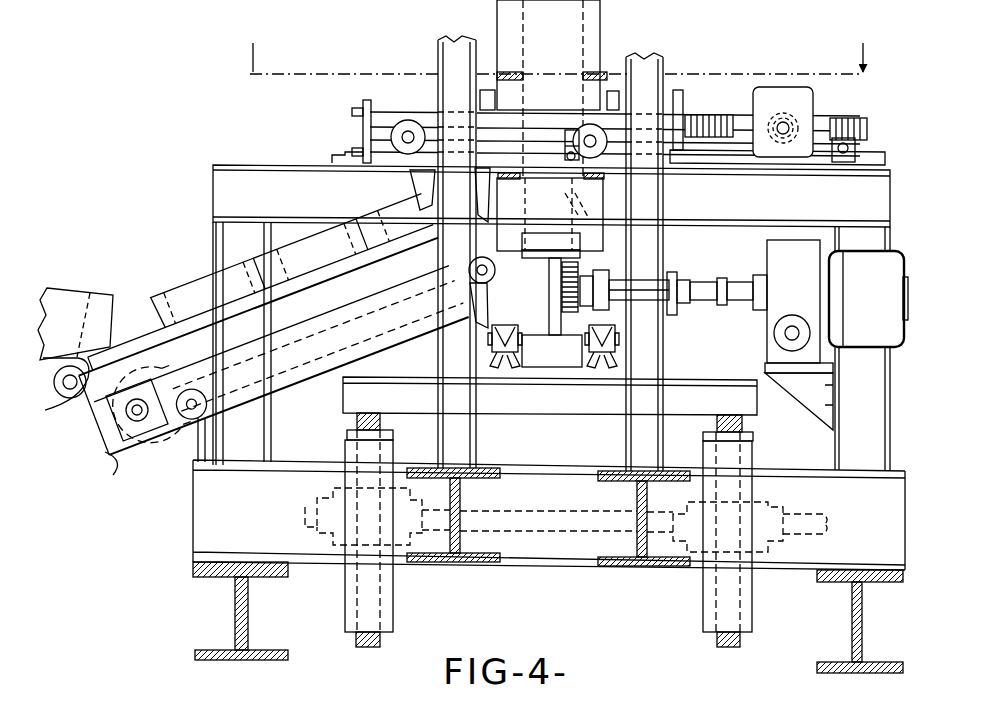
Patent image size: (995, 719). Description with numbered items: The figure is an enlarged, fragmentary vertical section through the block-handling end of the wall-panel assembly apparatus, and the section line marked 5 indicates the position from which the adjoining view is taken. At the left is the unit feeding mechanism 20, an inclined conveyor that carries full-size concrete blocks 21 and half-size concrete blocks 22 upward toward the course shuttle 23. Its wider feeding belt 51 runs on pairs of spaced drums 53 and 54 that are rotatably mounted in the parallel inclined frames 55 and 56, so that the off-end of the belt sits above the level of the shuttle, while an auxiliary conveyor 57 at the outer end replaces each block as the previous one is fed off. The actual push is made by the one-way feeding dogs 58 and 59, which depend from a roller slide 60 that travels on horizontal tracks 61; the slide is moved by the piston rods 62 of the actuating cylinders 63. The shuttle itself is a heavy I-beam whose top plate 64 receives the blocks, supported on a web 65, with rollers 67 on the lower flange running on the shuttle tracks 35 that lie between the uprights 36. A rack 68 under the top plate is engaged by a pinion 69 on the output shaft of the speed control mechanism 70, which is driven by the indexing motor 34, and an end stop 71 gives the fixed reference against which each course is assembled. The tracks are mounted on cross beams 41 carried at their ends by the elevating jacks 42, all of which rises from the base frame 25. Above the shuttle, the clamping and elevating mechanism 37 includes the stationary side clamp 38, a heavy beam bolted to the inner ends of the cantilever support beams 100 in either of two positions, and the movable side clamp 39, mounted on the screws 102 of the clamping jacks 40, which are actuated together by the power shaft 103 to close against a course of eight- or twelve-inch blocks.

The section line 5- 5 is at (557, 64).
The unit feeding mechanism 20 is at (190, 258).
The full-size concrete blocks 21 is at (63, 290).
The half-size concrete blocks 22 is at (620, 238).
The course shuttle 23 is at (537, 372).
The base frame 25 is at (517, 572).
The indexing motor 34 is at (870, 258).
The shuttle tracks 35 is at (620, 362).
The uprights 36 is at (890, 380).
The clamping and elevating mechanism 37 is at (679, 88).
The stationary side clamp 38 is at (482, 96).
The movable side clamp 39 is at (614, 93).
The clamping jacks 40 is at (710, 110).
The cross beams 41 is at (586, 418).
The elevating jacks 42 is at (345, 450).
The feeding belt 51 is at (147, 345).
The drums 53 is at (410, 310).
The drums 54 is at (140, 452).
The frame 55 is at (120, 460).
The frame 56 is at (102, 442).
The auxiliary conveyors 57 is at (80, 328).
The one-way feeding dog 58 is at (392, 190).
The one-way feeding dog 59 is at (563, 189).
The roller slide 60 is at (390, 138).
The horizontal tracks 61 is at (380, 100).
The piston rods 62 is at (550, 140).
The actuating cylinders 63 is at (703, 152).
The top plate 64 is at (535, 265).
The web 65 is at (548, 303).
The rollers 67 is at (520, 330).
The rack 68 is at (581, 268).
The pinion 69 is at (561, 315).
The speed control mechanism 70 is at (773, 252).
The end stop 71 is at (546, 236).
The cantilever support beams 100 is at (290, 165).
The screws 102 is at (735, 104).
The power shaft 103 is at (787, 113).